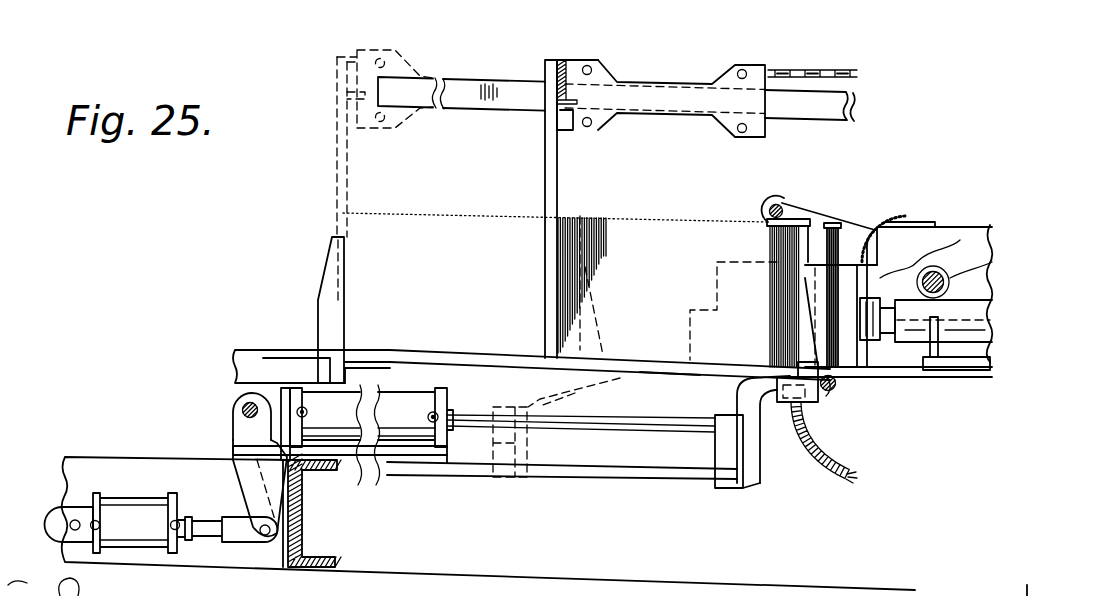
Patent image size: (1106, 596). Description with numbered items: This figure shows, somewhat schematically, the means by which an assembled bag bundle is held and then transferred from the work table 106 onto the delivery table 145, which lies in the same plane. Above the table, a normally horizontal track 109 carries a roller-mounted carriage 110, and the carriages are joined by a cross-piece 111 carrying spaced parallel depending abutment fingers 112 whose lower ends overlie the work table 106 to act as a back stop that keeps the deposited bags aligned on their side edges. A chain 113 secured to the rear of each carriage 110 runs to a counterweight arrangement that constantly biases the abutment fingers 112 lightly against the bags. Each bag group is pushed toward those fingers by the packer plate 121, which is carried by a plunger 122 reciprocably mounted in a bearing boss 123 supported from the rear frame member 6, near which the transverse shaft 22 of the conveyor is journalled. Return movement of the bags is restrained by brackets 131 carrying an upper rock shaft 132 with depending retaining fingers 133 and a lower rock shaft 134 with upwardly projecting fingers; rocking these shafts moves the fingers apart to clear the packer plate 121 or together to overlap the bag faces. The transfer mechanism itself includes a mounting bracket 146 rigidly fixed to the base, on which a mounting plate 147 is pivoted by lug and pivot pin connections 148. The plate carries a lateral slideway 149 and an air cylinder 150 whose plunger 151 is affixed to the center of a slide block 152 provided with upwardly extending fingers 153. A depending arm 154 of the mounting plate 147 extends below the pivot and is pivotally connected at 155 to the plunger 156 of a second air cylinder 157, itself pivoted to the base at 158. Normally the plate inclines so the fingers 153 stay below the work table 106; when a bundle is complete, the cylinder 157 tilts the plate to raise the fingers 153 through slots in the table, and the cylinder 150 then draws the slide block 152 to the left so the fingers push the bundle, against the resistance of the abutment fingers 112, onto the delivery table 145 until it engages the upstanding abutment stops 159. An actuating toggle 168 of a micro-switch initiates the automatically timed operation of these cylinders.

The rear frame member 6 is at (1000, 240).
The transversely disposed shaft 22 is at (950, 280).
The work table 106 is at (673, 372).
The track 109 is at (858, 106).
The roller-mounted carriage 110 is at (725, 76).
The cross-piece 111 is at (362, 58).
The abutment fingers 112 is at (333, 186).
The chain 113 is at (838, 70).
The packer plate 121 is at (920, 250).
The plunger 122 is at (897, 316).
The bearing boss 123 is at (985, 318).
The brackets 131 is at (855, 225).
The upper rock shaft 132 is at (802, 168).
The retaining fingers 133 is at (808, 215).
The lower rock shaft 134 is at (840, 394).
The delivery table 145 is at (395, 351).
The mounting bracket 146 is at (233, 432).
The mounting plate 147 is at (363, 476).
The pivot pin connections 148 is at (235, 402).
The slideway 149 is at (580, 479).
The air cylinder 150 is at (377, 386).
The plunger 151 is at (560, 430).
The slide block 152 is at (482, 477).
The fingers 153 is at (588, 277).
The depending arm 154 is at (247, 459).
The pivot connection 155 is at (292, 546).
The plunger 156 is at (207, 542).
The air cylinder 157 is at (123, 548).
The pivot connection 158 is at (70, 460).
The abutment stops 159 is at (330, 307).
The actuating toggle 168 is at (1030, 588).